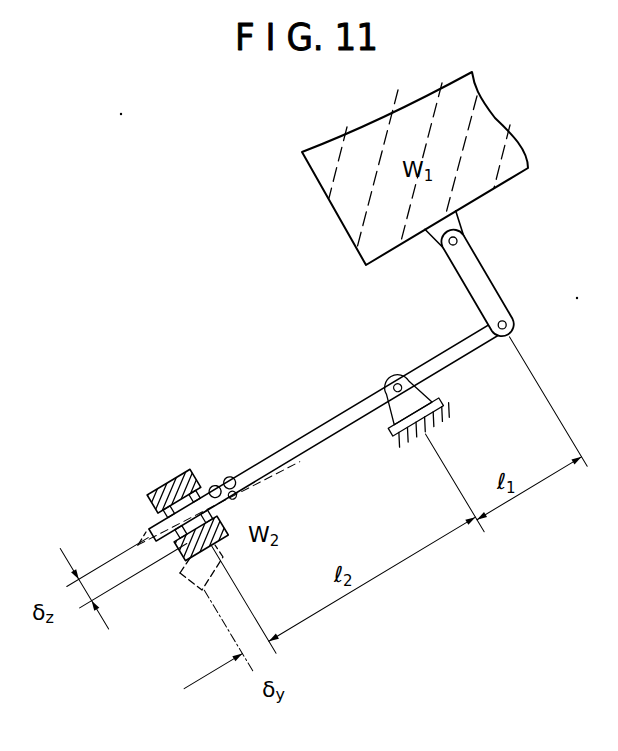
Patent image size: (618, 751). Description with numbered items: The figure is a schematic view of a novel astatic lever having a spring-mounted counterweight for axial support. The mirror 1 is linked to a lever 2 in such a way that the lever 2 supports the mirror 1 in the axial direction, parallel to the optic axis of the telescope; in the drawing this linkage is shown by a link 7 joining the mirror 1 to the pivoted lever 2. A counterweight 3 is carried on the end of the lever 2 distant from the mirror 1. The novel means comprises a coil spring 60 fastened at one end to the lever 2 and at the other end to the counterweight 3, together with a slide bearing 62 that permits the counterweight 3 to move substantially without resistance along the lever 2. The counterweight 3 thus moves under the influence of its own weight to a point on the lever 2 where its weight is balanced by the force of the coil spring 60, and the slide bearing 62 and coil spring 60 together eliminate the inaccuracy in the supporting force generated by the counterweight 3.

The mirror 1 is at (316, 175).
The lever 2 is at (327, 422).
The counterweight 3 is at (188, 472).
The connecting link 7 is at (462, 358).
The coil spring 60 is at (217, 480).
The slide bearing 62 is at (155, 511).